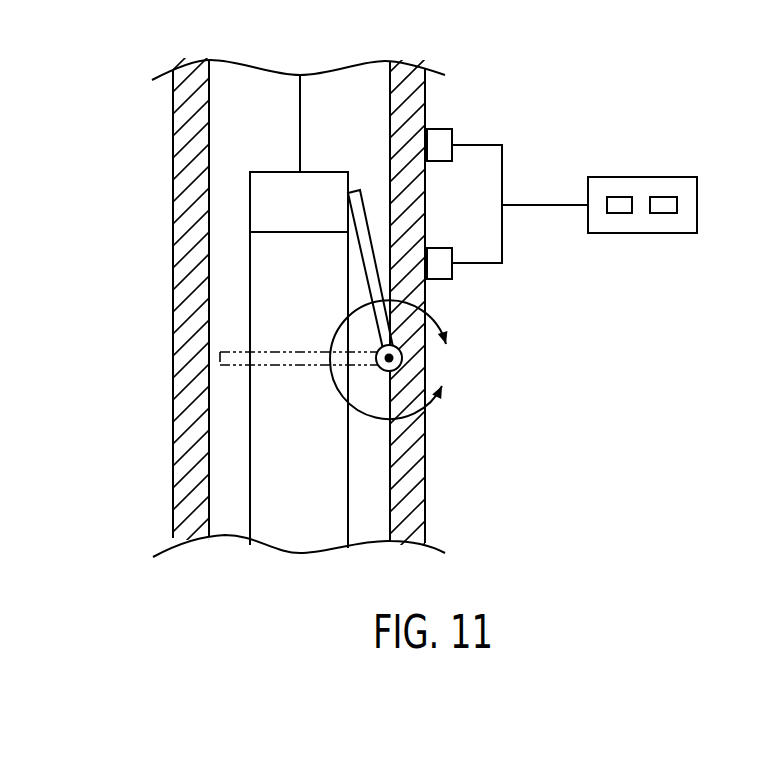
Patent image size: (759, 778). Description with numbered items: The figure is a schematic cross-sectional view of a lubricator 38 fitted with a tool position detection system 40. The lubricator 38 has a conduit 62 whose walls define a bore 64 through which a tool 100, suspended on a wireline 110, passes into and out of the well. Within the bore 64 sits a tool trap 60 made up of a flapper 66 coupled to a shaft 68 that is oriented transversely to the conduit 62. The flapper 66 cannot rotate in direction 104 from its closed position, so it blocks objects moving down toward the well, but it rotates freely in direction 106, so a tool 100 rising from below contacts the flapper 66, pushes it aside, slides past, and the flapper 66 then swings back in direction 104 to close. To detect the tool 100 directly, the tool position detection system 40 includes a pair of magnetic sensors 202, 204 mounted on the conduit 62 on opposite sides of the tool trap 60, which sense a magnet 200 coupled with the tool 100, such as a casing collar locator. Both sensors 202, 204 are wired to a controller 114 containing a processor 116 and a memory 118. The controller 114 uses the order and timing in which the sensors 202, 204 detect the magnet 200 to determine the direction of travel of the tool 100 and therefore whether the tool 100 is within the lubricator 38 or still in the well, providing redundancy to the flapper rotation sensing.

The lubricator 38 is at (604, 80).
The tool position detection system 40 is at (575, 318).
The tool trap 60 is at (126, 272).
The conduit 62 is at (198, 340).
The bore 64 is at (228, 457).
The flapper 66 is at (370, 275).
The shaft 68 is at (400, 362).
The tool 100 is at (331, 452).
The direction 104 is at (408, 423).
The direction 106 is at (416, 308).
The wireline 110 is at (300, 122).
The controller 114 is at (666, 227).
The processor 116 is at (620, 213).
The memory 118 is at (663, 213).
The magnet 200 is at (250, 202).
The sensor 202 is at (432, 129).
The sensor 204 is at (452, 272).